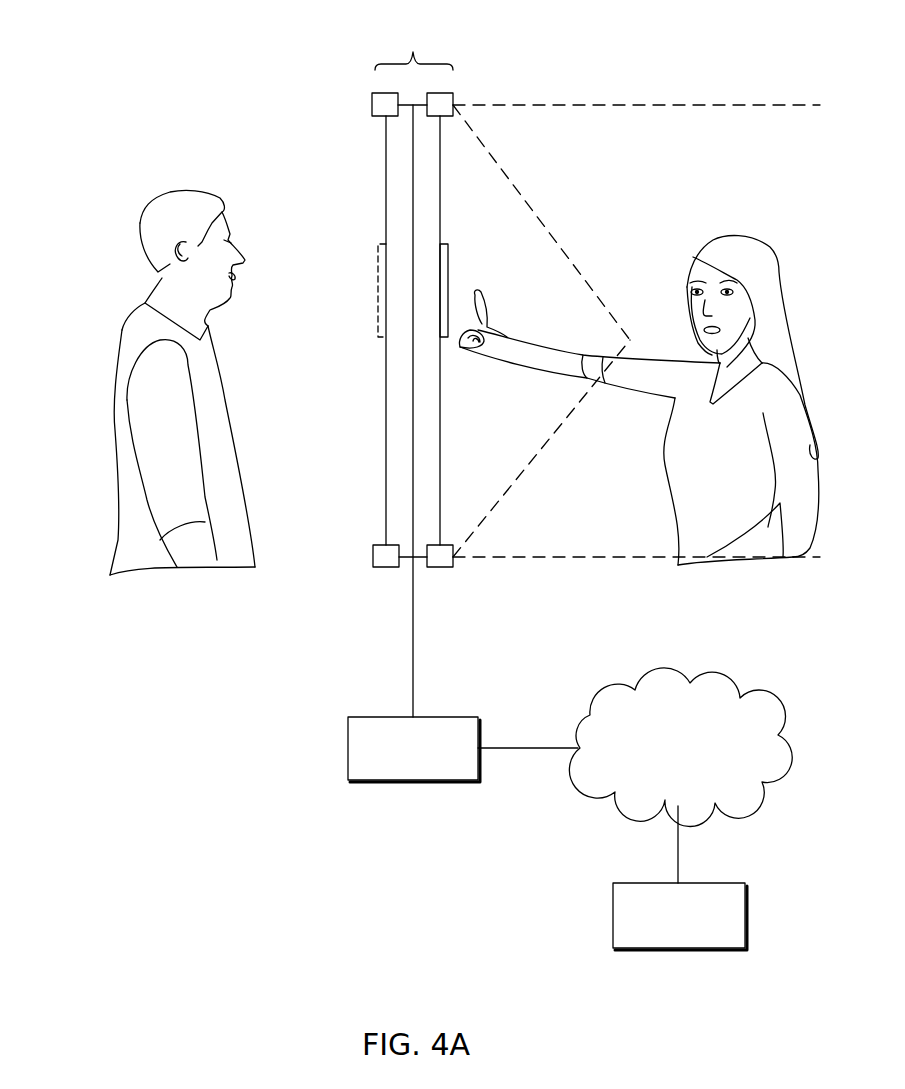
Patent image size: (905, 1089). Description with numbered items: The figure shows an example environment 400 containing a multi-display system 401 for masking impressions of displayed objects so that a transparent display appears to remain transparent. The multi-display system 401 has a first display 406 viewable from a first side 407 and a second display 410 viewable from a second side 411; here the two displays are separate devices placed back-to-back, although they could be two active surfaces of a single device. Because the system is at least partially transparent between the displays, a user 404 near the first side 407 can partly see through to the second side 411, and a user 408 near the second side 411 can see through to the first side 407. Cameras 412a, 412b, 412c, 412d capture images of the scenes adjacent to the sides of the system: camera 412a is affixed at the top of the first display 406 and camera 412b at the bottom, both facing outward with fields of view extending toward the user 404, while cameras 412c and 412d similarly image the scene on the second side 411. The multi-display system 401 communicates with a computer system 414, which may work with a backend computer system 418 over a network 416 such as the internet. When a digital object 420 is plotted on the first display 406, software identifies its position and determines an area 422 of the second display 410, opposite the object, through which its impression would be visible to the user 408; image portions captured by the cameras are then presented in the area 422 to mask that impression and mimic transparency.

The environment 400 is at (260, 705).
The multi-display system 401 is at (413, 52).
The user 404 is at (800, 398).
The first display 406 is at (437, 170).
The first side 407 is at (500, 224).
The user 408 is at (118, 357).
The second display 410 is at (392, 169).
The second side 411 is at (328, 215).
The camera 412a is at (446, 97).
The camera 412b is at (447, 566).
The camera 412c is at (386, 565).
The camera 412d is at (378, 95).
The computer system 414 is at (420, 781).
The network 416 is at (733, 695).
The backend computer system 418 is at (745, 917).
The digital object 420 is at (449, 262).
The area 422 is at (378, 272).